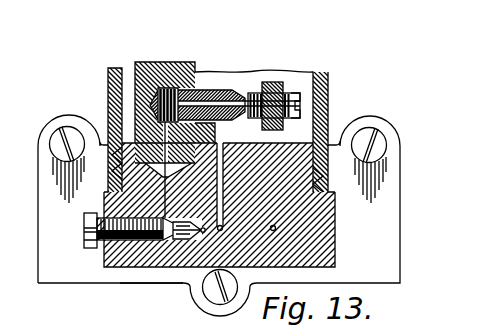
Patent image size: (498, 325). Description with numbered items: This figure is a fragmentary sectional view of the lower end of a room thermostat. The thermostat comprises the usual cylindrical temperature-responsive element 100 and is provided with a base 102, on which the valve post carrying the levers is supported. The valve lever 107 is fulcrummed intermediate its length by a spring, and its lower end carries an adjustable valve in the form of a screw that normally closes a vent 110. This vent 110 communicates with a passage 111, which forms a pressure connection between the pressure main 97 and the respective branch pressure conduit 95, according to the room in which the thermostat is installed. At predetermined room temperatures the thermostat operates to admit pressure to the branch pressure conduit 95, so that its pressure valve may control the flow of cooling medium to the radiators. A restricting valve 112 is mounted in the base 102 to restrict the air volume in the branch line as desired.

The cylindrical temperature-responsive element 100 is at (330, 84).
The base 102 is at (336, 227).
The valve lever 107 is at (282, 83).
The vent 110 is at (222, 95).
The passage 111 is at (177, 238).
The restricting valve 112 is at (86, 250).
The branch pressure conduit 95 is at (236, 306).
The pressure main 97 is at (151, 304).